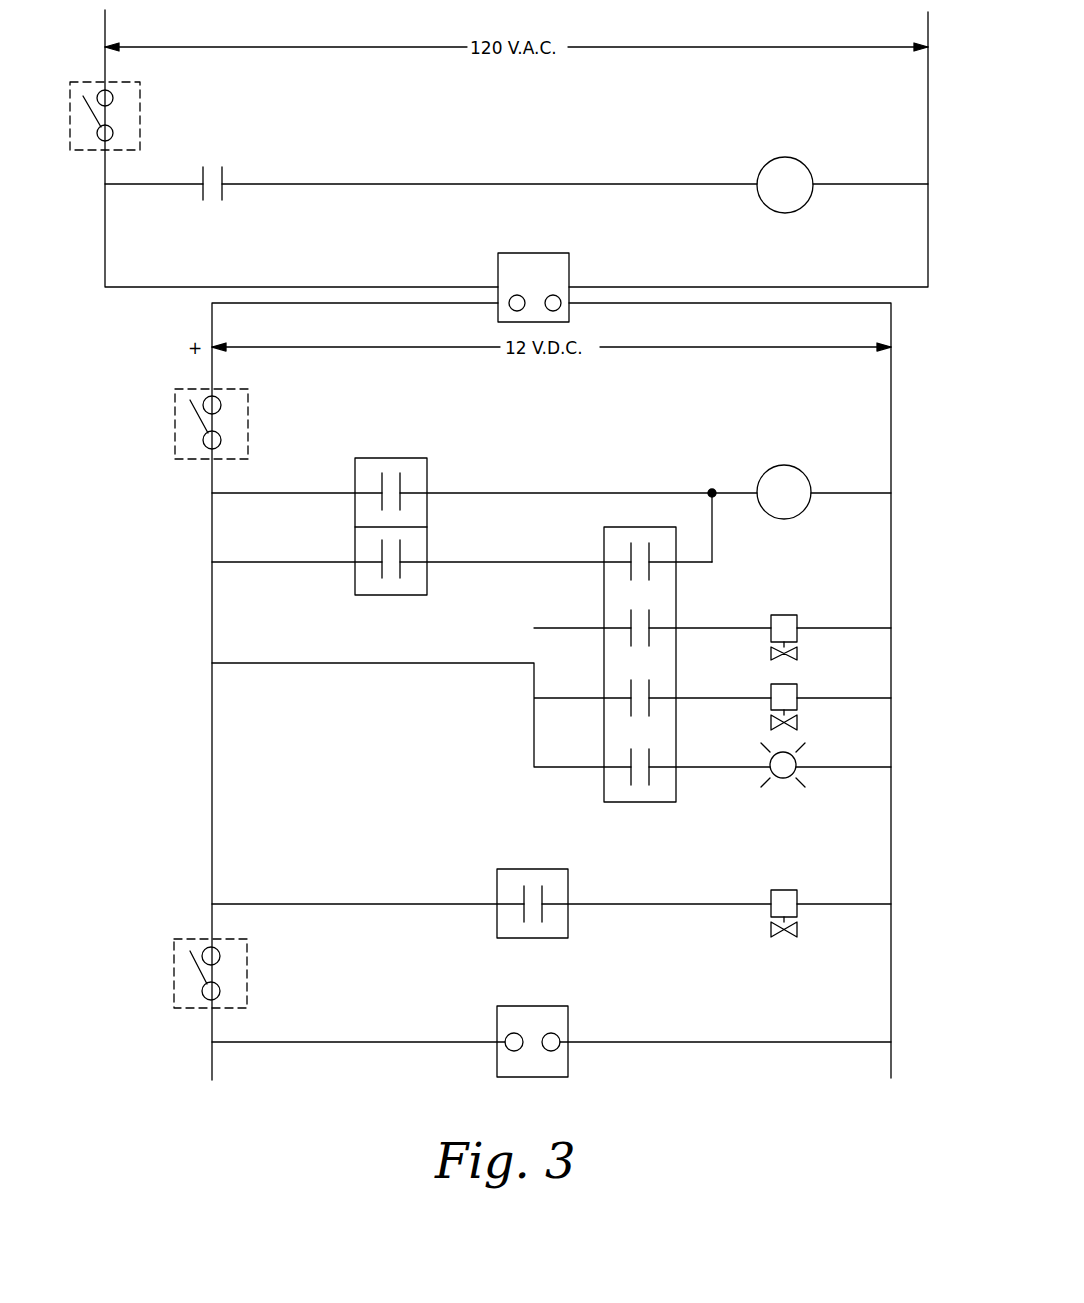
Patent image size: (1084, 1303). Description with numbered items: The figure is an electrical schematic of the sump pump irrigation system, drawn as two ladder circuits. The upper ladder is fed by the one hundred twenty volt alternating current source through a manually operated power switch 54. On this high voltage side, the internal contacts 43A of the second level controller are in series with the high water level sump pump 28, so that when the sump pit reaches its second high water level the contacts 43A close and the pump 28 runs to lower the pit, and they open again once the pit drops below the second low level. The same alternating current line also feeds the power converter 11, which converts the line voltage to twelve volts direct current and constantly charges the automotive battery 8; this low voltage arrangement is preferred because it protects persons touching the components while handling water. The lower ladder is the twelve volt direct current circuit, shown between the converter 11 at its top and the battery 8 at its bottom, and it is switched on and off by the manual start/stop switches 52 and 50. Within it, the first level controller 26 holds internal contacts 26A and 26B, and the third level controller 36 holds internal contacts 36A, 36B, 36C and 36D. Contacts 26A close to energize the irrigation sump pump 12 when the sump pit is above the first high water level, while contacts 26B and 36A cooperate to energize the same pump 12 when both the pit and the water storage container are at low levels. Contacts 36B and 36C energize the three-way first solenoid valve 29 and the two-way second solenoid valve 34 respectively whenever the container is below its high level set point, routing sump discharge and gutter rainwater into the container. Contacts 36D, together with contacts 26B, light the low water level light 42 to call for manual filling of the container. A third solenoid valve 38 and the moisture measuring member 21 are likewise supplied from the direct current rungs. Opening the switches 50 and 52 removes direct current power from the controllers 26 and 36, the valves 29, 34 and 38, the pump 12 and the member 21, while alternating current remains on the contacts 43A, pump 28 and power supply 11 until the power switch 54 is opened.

The power switch 54 is at (140, 117).
The internal contacts of second level controller 43A is at (222, 170).
The high water level sump pump 28 is at (785, 157).
The power converter 11 is at (569, 270).
The start/stop switch 52 is at (175, 424).
The irrigation sump pump 12 is at (784, 465).
The first level controller 26 is at (387, 534).
The internal contacts of first level controller 26A is at (395, 505).
The internal contacts of first level controller 26B is at (395, 573).
The third level controller 36 is at (636, 672).
The internal contacts of third level controller 36A is at (644, 575).
The internal contacts of third level controller 36B is at (644, 642).
The internal contacts of third level controller 36C is at (644, 712).
The internal contacts of third level controller 36D is at (644, 780).
The three-way first solenoid valve 29 is at (797, 620).
The two-way second solenoid valve 34 is at (797, 690).
The low water level light 42 is at (796, 757).
The moisture measuring member 21 is at (568, 885).
The solenoid valve 38 is at (797, 895).
The start/stop switch 50 is at (174, 974).
The automotive battery 8 is at (568, 1020).